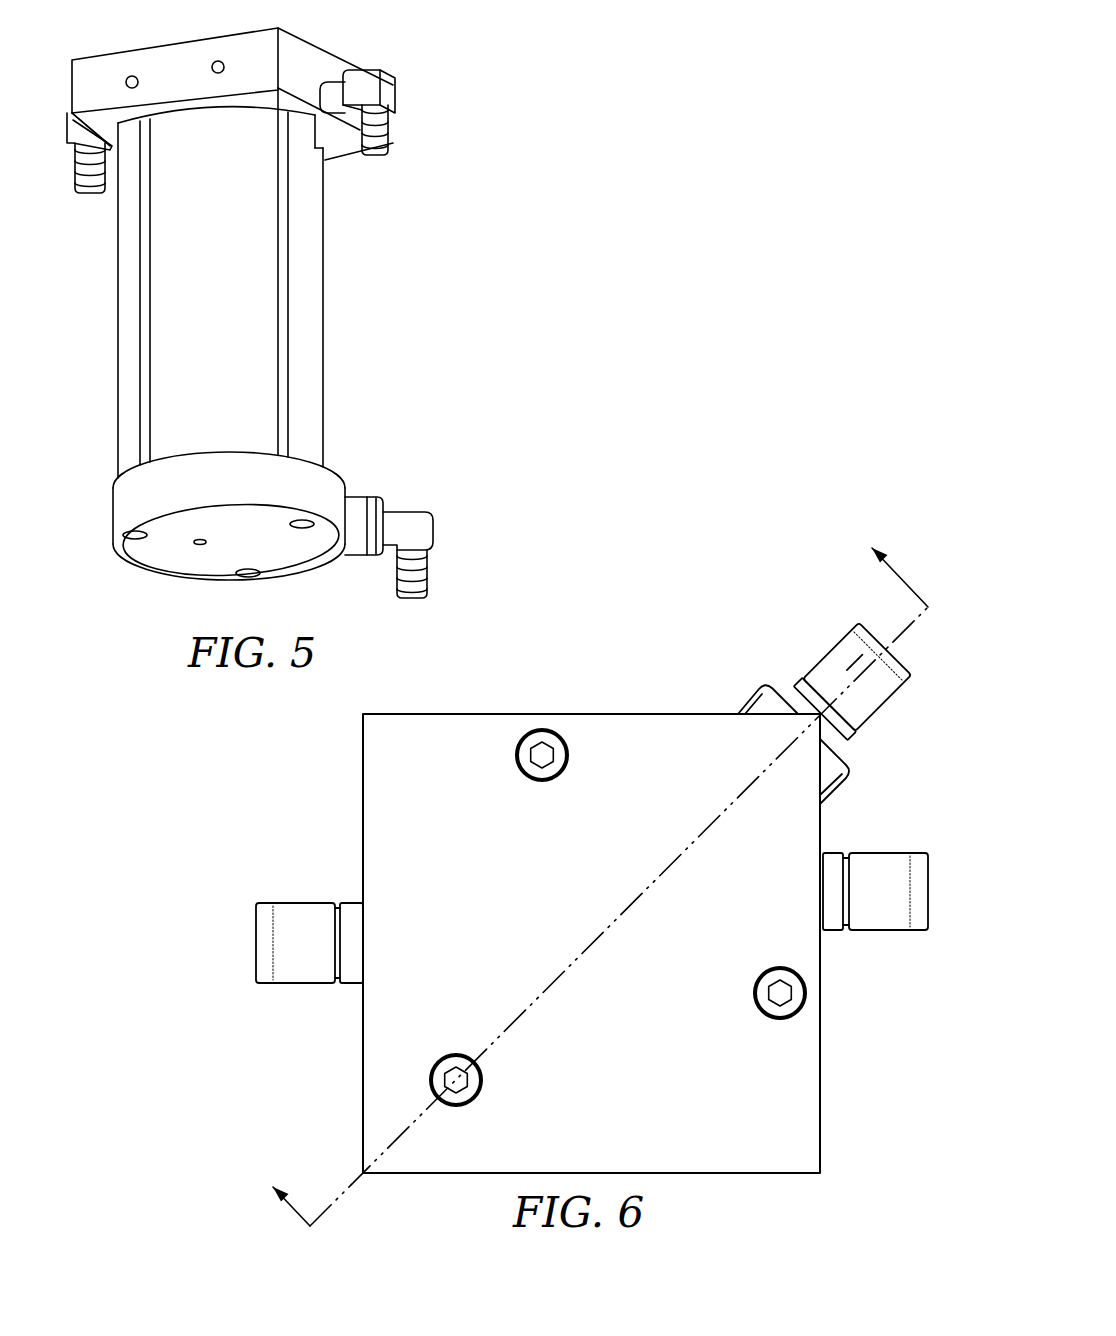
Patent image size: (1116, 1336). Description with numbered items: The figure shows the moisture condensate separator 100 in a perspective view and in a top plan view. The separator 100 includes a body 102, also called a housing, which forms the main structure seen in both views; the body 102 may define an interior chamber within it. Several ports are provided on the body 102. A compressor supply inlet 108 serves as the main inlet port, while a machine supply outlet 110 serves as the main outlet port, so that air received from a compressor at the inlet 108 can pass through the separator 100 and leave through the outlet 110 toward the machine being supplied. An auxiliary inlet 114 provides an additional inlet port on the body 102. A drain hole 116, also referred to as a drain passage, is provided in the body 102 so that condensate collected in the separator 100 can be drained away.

In FIG. 5, the moisture condensate separator 100 is at (252, 337).
In FIG. 6, the moisture condensate separator 100 is at (584, 878).
In FIG. 5, the body 102 is at (132, 307).
In FIG. 6, the body 102 is at (373, 770).
In FIG. 5, the compressor supply inlet 108 is at (87, 195).
In FIG. 5, the machine supply outlet 110 is at (378, 157).
In FIG. 5, the auxiliary inlet 114 is at (415, 600).
In FIG. 5, the drain hole 116 is at (200, 546).